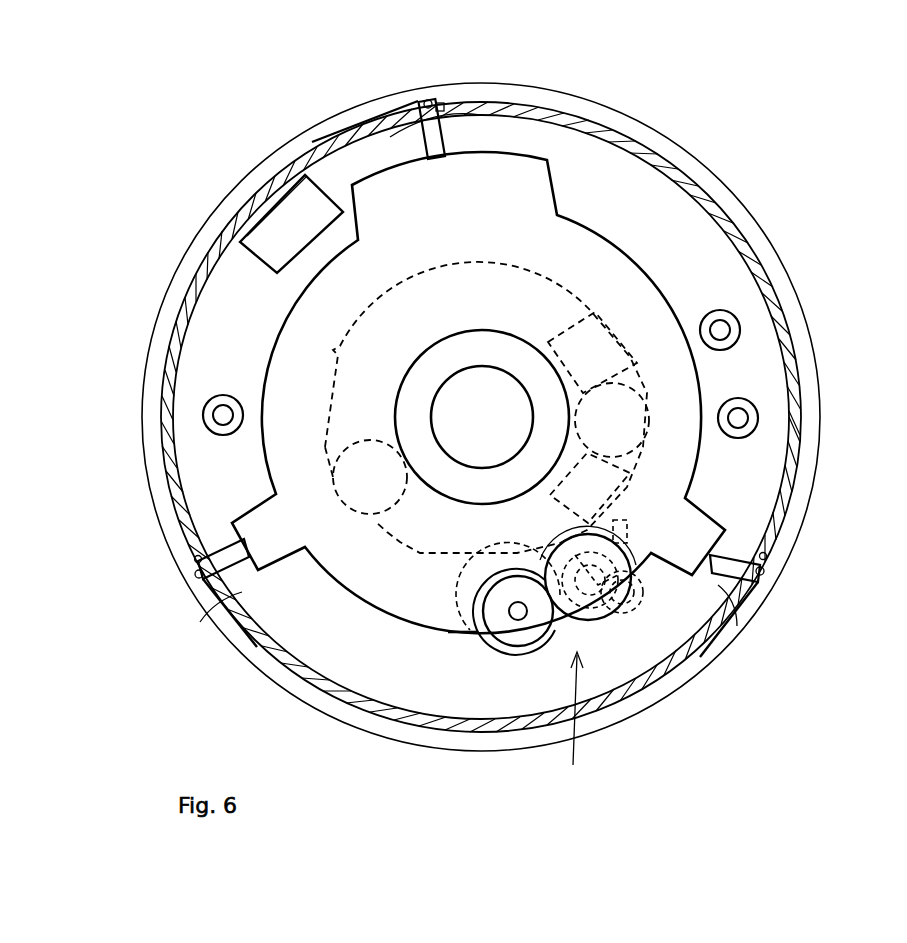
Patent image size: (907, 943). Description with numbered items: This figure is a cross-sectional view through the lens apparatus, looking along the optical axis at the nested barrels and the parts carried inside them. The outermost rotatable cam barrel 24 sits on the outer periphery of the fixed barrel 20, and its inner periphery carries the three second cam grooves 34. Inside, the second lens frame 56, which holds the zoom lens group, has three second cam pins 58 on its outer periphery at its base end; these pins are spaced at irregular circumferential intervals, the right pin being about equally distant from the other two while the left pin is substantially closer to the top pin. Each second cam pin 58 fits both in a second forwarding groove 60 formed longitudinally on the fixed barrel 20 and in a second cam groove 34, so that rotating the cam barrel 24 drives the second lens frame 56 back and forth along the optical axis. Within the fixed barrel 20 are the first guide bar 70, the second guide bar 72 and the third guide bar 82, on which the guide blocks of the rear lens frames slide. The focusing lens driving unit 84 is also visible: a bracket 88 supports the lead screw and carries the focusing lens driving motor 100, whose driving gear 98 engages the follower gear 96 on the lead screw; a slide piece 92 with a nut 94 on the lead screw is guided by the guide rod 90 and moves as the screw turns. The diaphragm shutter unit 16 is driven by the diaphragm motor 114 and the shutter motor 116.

The diaphragm shutter unit 16 is at (383, 313).
The fixed barrel 20 is at (735, 205).
The cam barrel 24 is at (742, 213).
The second cam grooves 34 is at (428, 100).
The second lens frame 56 is at (305, 325).
The second cam pins 58 is at (402, 124).
The second forwarding grooves 60 is at (444, 103).
The first guide bar 70 is at (723, 330).
The second guide bar 72 is at (220, 416).
The third guide bar 82 is at (741, 419).
The focusing lens driving unit 84 is at (573, 723).
The bracket 88 is at (600, 605).
The guide rod 90 is at (646, 600).
The slide piece 92 is at (640, 605).
The nut 94 is at (602, 567).
The follower gear 96 is at (610, 605).
The driving gear 98 is at (517, 633).
The focusing lens driving motor 100 is at (493, 645).
The diaphragm motor 114 is at (342, 482).
The shutter motor 116 is at (625, 405).